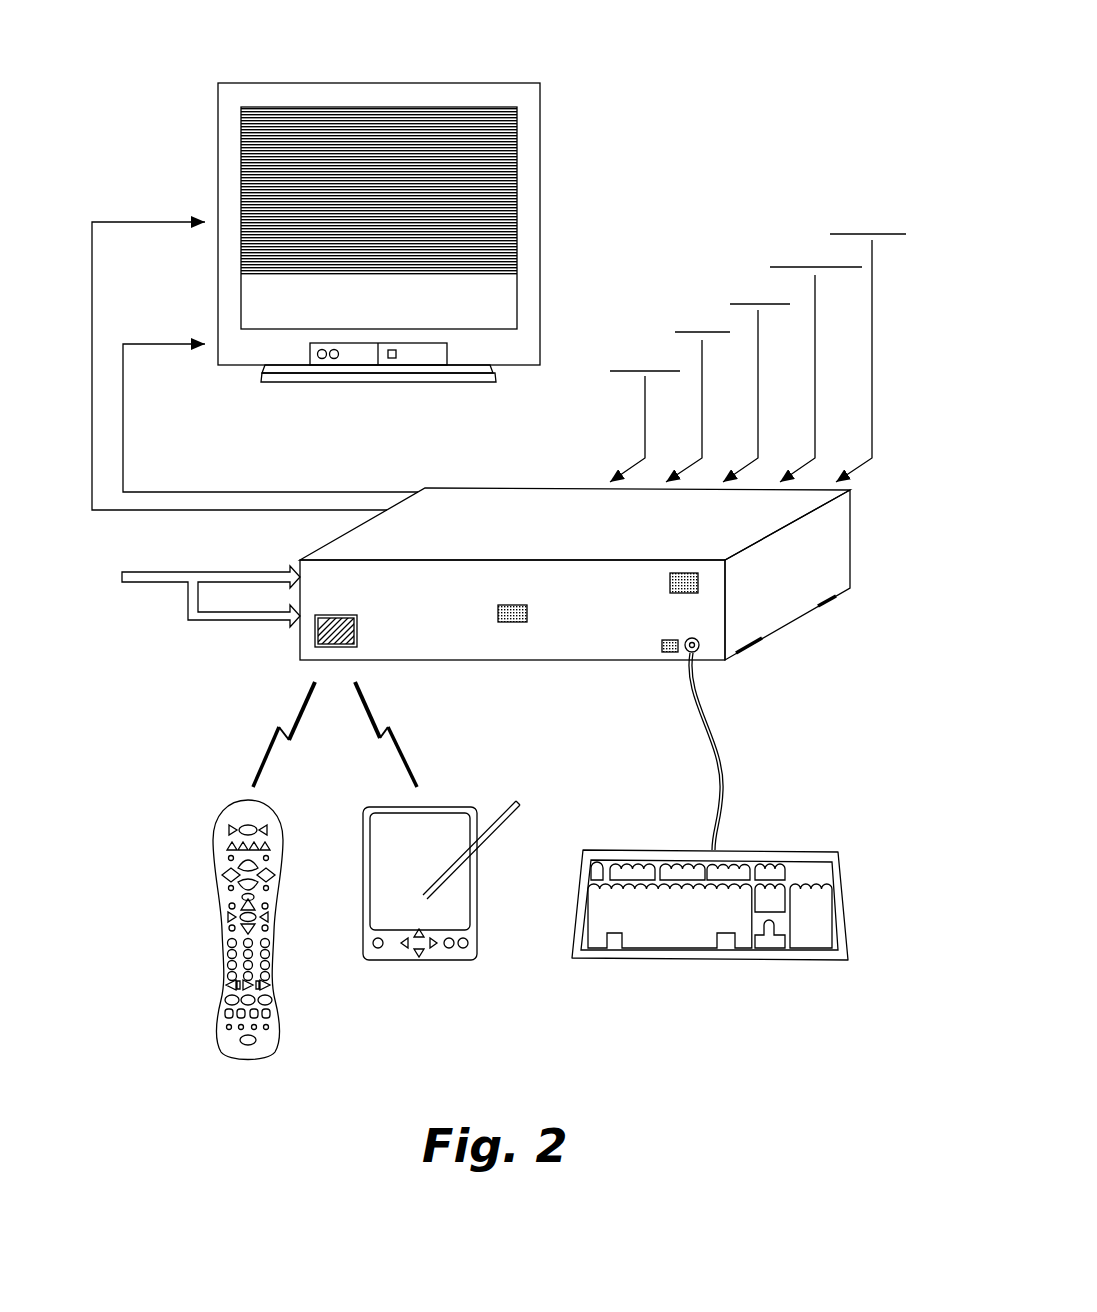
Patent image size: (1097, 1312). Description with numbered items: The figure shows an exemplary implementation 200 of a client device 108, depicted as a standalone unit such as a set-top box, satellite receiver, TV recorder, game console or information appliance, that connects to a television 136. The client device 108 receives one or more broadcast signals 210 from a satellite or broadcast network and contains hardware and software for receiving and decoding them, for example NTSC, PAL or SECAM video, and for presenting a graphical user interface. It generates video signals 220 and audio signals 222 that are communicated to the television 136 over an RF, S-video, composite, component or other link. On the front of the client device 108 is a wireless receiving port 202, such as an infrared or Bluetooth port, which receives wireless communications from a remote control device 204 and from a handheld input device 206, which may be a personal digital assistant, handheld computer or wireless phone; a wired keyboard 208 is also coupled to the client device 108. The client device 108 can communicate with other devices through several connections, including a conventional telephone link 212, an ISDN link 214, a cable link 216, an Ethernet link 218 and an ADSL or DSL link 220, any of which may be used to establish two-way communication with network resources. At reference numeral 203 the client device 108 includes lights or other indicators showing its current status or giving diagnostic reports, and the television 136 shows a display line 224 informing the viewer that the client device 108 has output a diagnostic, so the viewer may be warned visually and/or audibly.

The exemplary implementation 200 is at (808, 80).
The television 136 is at (533, 359).
The display line 224 is at (528, 290).
The video signal(s) / ADSL and-or DSL link 220 is at (180, 254).
The audio signal(s) 222 is at (180, 377).
The client device 108 is at (485, 487).
The wireless receiving port 202 is at (348, 615).
The lights or other indicators 203 is at (523, 605).
The broadcast signals 210 is at (175, 584).
The telephone link 212 is at (645, 332).
The ISDN link 214 is at (703, 297).
The cable link 216 is at (758, 263).
The Ethernet link 218 is at (815, 230).
The remote control device 204 is at (217, 825).
The handheld input device 206 is at (438, 807).
The wired keyboard 208 is at (758, 850).